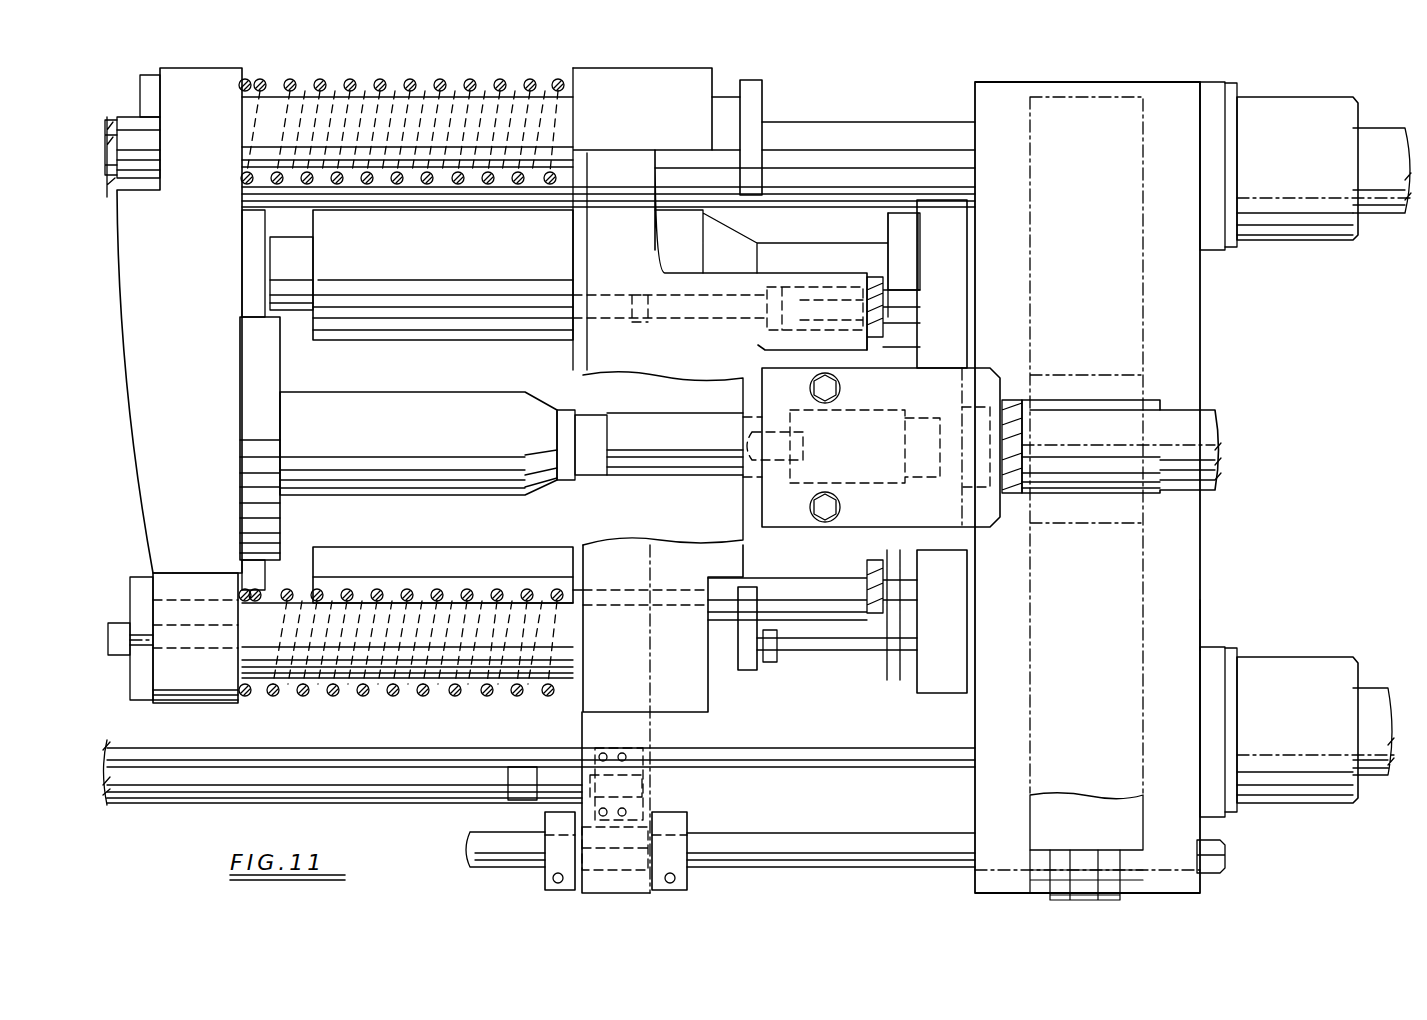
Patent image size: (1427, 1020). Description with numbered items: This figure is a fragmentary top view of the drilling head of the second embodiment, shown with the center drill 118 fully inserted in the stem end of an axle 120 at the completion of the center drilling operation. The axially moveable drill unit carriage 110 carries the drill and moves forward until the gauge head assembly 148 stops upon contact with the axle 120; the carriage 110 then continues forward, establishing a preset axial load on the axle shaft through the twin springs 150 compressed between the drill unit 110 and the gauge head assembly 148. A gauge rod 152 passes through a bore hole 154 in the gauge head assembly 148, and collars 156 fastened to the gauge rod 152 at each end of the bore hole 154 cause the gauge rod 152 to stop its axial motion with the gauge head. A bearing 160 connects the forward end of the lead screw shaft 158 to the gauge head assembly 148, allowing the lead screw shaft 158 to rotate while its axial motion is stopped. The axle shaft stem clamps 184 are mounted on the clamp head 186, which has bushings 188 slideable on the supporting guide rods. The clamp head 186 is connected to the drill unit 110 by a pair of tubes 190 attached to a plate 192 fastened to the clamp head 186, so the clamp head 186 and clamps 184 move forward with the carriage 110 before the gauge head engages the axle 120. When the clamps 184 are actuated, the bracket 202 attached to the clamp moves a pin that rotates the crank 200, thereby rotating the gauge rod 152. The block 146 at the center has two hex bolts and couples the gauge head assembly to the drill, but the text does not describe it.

The drill unit carriage 110 is at (173, 385).
The center drill 118 is at (1028, 440).
The axle 120 is at (1140, 398).
The coupling block with bolts 146 is at (842, 388).
The gauge head assembly 148 is at (643, 905).
The twin springs 150 is at (468, 88).
The gauge rod 152 is at (885, 842).
The bore hole 154 is at (615, 848).
The collars 156 is at (545, 824).
The lead screw shaft 158 is at (377, 800).
The bearing 160 is at (630, 745).
The axle shaft stem clamps 184 is at (1140, 328).
The clamp head 186 is at (1200, 625).
The bushings 188 is at (1318, 238).
The tubes 190 is at (500, 556).
The plate 192 is at (950, 693).
The crank 200 is at (1095, 900).
The bracket 202 is at (1087, 852).